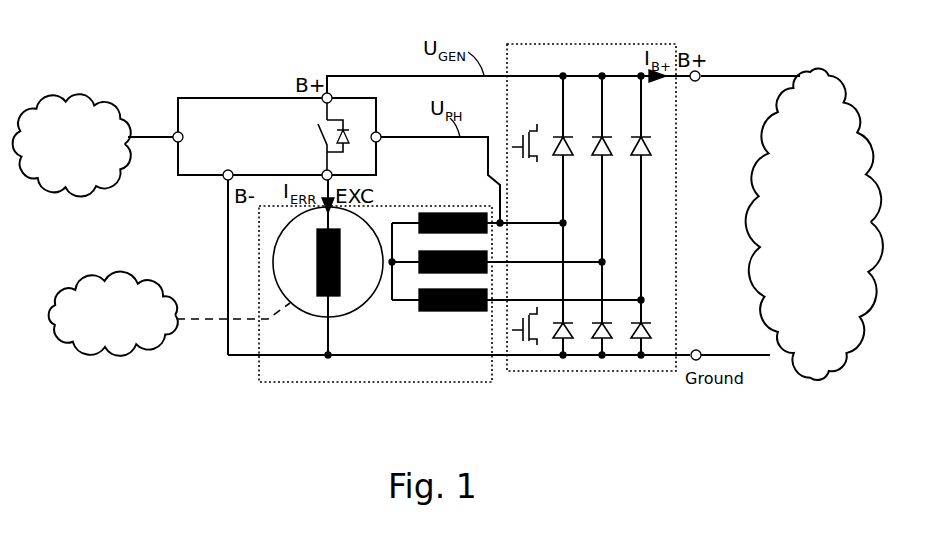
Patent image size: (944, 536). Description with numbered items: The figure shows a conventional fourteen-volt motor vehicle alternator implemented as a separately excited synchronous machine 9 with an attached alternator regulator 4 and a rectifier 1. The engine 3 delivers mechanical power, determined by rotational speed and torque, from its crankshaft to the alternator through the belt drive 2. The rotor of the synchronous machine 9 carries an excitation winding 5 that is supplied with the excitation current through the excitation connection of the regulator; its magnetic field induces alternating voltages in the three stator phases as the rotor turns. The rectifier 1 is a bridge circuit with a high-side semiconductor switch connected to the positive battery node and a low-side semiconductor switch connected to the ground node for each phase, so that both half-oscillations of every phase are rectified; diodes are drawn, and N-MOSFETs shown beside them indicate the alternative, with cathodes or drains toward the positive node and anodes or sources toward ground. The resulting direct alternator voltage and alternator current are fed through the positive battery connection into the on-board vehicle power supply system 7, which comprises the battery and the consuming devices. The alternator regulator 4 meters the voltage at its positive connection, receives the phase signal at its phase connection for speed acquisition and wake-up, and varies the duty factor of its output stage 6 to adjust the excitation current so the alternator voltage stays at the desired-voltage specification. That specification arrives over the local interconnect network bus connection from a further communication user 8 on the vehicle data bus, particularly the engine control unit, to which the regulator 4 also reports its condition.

The rectifier 1 is at (600, 372).
The belt drive 2 is at (217, 318).
The engine 3 is at (113, 314).
The alternator regulator 4 is at (250, 98).
The excitation winding 5 is at (317, 267).
The output stage 6 is at (320, 122).
The on-board vehicle power supply system 7 is at (814, 224).
The communication user 8 is at (93, 145).
The synchronous machine 9 is at (384, 305).